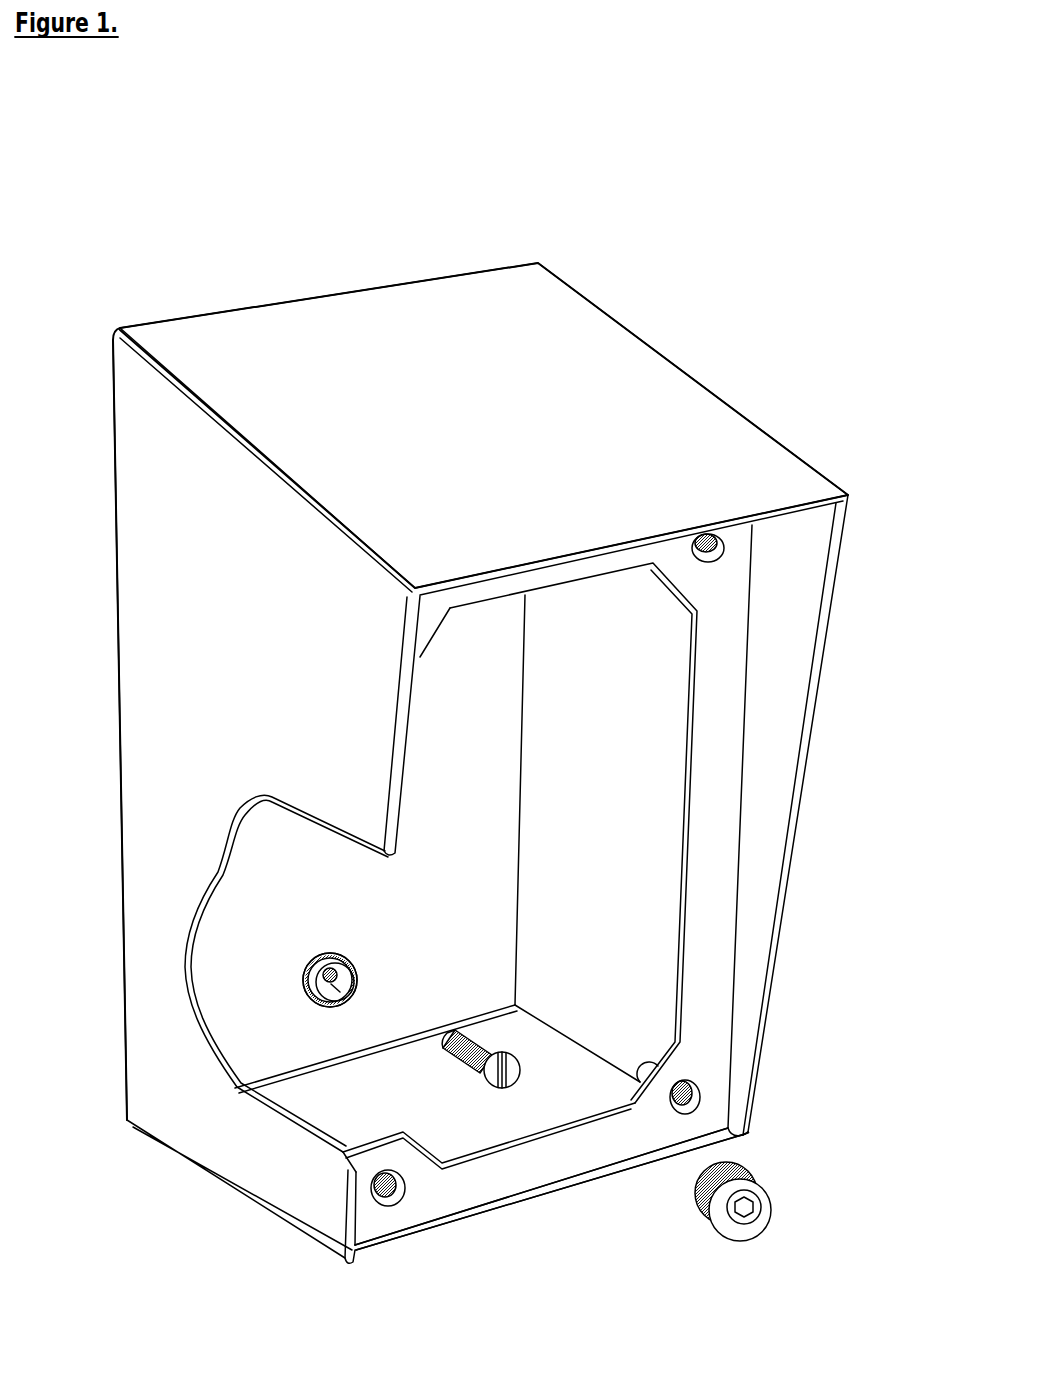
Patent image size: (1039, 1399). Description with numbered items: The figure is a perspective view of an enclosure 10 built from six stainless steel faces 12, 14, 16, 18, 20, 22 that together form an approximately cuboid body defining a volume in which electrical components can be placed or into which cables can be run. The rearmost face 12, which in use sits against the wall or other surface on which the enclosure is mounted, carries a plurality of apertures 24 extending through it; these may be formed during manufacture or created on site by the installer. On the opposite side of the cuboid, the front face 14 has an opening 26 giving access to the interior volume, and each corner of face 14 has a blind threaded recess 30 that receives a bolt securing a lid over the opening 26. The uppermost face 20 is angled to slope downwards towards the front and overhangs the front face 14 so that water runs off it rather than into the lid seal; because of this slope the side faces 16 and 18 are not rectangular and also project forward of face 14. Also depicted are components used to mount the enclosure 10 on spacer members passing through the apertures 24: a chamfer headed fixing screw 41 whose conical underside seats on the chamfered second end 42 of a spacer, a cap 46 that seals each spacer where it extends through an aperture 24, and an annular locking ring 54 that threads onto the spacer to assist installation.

The enclosure 10 is at (235, 250).
The rearmost face 12 is at (223, 957).
The front face 14 is at (513, 1177).
The side face 16 is at (290, 1207).
The side face 18 is at (800, 598).
The uppermost face 20 is at (617, 350).
The face 22 is at (317, 1118).
The apertures 24 is at (307, 967).
The opening 26 is at (665, 802).
The blind threaded recesses 30 is at (710, 535).
The chamfer headed fixing screw 41 is at (510, 1066).
The second end 42 is at (312, 1000).
The cap 46 is at (718, 1230).
The locking ring 54 is at (320, 957).